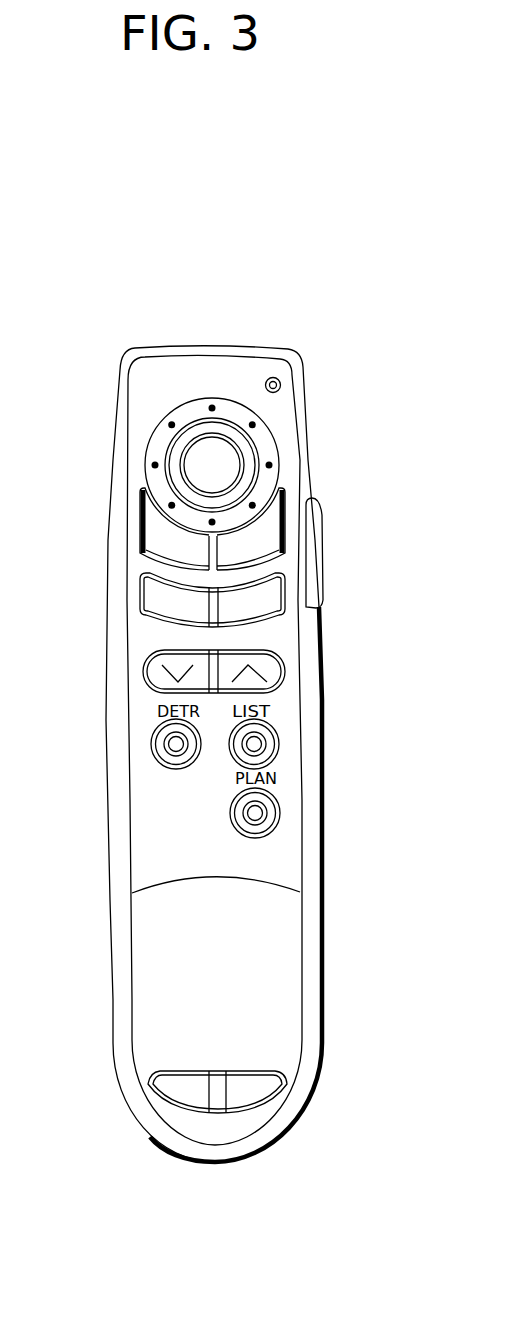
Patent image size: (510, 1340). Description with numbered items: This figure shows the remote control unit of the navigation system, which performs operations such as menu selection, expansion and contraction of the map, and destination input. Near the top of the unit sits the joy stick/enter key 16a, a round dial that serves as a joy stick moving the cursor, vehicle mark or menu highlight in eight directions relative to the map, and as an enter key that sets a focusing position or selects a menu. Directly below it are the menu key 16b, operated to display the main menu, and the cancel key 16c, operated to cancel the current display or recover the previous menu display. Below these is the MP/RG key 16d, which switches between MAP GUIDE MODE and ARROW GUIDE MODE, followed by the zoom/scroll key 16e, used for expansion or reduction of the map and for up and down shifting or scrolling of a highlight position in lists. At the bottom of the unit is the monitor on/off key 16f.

The joy stick/enter key 16a is at (228, 452).
The menu key 16b is at (153, 513).
The cancel key 16c is at (272, 516).
The MP/RG key 16d is at (273, 618).
The zoom/scroll key 16e is at (150, 680).
The monitor on/off key 16f is at (218, 1111).